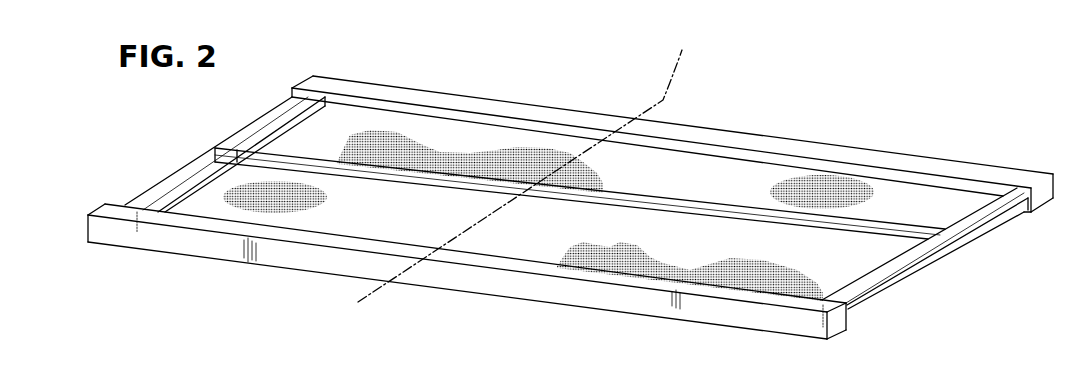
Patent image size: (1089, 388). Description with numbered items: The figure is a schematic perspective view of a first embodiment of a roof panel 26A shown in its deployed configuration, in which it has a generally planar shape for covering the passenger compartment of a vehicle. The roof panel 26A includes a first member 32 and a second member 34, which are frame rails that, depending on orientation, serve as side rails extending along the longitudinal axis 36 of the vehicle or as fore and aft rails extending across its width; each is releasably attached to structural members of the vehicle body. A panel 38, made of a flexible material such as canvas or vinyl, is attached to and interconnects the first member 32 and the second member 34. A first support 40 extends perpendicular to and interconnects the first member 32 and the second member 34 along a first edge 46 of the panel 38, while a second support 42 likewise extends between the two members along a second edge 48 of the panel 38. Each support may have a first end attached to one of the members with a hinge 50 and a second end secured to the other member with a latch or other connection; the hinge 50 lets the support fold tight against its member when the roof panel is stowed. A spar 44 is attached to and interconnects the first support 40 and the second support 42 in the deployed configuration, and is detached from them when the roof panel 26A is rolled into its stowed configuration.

The roof panel 26A is at (749, 91).
The first member 32 is at (503, 284).
The second member 34 is at (462, 99).
The longitudinal axis 36 is at (525, 166).
The panel 38 is at (738, 172).
The first support 40 is at (163, 185).
The second support 42 is at (877, 280).
The spar 44 is at (877, 225).
The first edge 46 is at (214, 157).
The second edge 48 is at (948, 252).
The hinge 50 is at (137, 222).